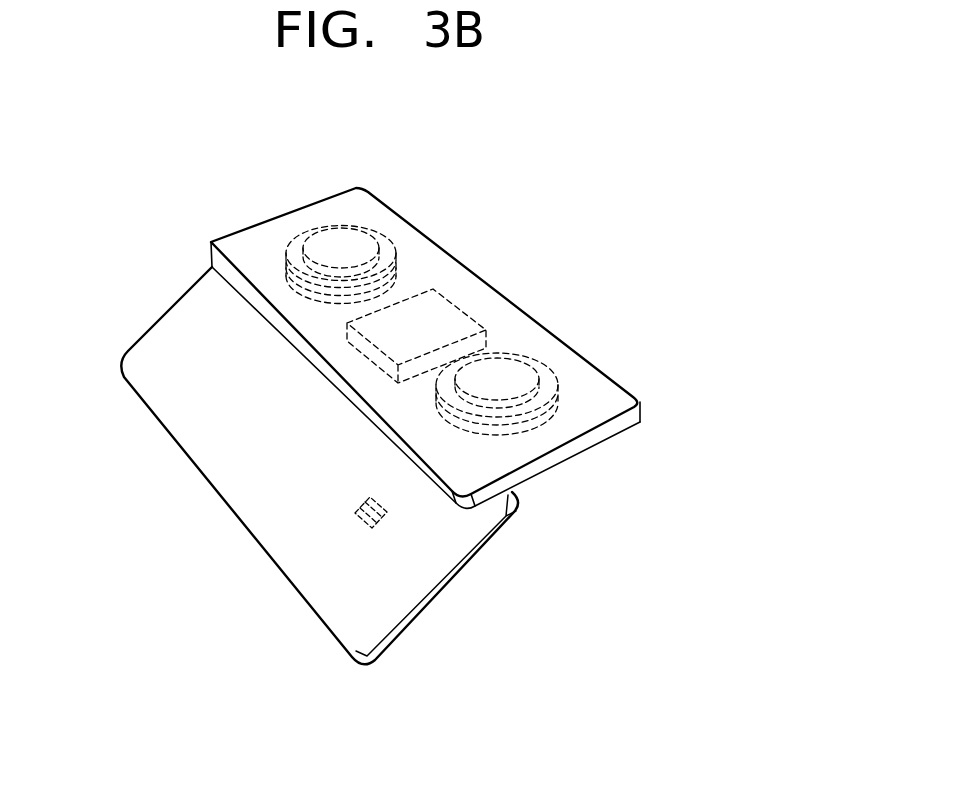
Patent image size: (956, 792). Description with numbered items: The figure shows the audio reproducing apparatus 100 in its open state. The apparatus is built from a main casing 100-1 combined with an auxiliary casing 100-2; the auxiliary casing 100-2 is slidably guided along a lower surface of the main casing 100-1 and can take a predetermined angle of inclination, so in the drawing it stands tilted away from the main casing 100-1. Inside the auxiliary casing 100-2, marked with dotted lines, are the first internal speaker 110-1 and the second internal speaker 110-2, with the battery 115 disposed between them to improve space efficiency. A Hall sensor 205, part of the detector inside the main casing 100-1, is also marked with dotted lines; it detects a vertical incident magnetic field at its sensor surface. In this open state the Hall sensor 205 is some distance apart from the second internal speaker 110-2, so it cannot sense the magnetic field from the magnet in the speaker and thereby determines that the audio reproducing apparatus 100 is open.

The audio reproducing apparatus 100 is at (245, 178).
The main casing 100-1 is at (493, 548).
The auxiliary casing 100-2 is at (595, 442).
The first internal speaker 110-1 is at (382, 242).
The second internal speaker 110-2 is at (547, 370).
The battery 115 is at (433, 289).
The Hall sensor 205 is at (357, 513).